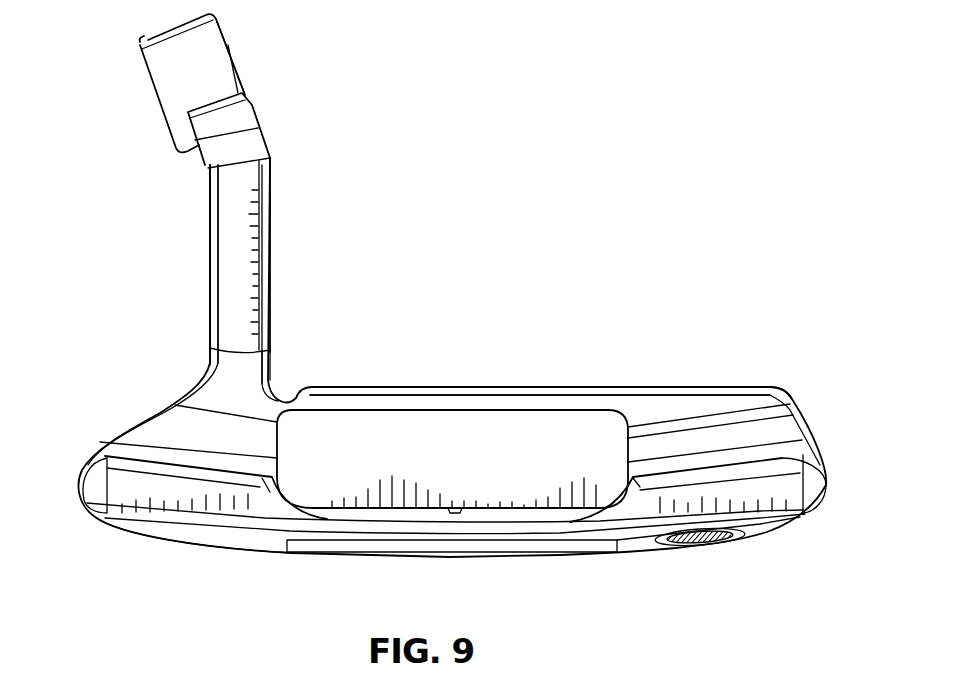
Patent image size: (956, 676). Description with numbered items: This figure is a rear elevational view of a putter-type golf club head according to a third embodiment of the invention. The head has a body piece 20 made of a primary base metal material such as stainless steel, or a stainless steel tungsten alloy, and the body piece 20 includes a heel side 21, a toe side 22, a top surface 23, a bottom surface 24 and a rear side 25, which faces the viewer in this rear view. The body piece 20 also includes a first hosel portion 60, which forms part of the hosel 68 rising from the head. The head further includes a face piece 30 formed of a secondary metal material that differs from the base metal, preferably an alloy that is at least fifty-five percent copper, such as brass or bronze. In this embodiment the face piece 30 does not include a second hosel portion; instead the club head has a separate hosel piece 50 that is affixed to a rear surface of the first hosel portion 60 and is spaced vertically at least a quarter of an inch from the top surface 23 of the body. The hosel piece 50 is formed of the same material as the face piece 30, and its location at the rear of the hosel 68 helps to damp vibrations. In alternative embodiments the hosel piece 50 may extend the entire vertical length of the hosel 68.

The body piece 20 is at (810, 423).
The heel side 21 is at (76, 483).
The toe side 22 is at (820, 453).
The top surface 23 is at (383, 393).
The bottom surface 24 is at (175, 541).
The rear side 25 is at (330, 524).
The face piece 30 is at (752, 381).
The hosel piece 50 is at (240, 261).
The first hosel portion 60 is at (267, 366).
The hosel 68 is at (185, 162).